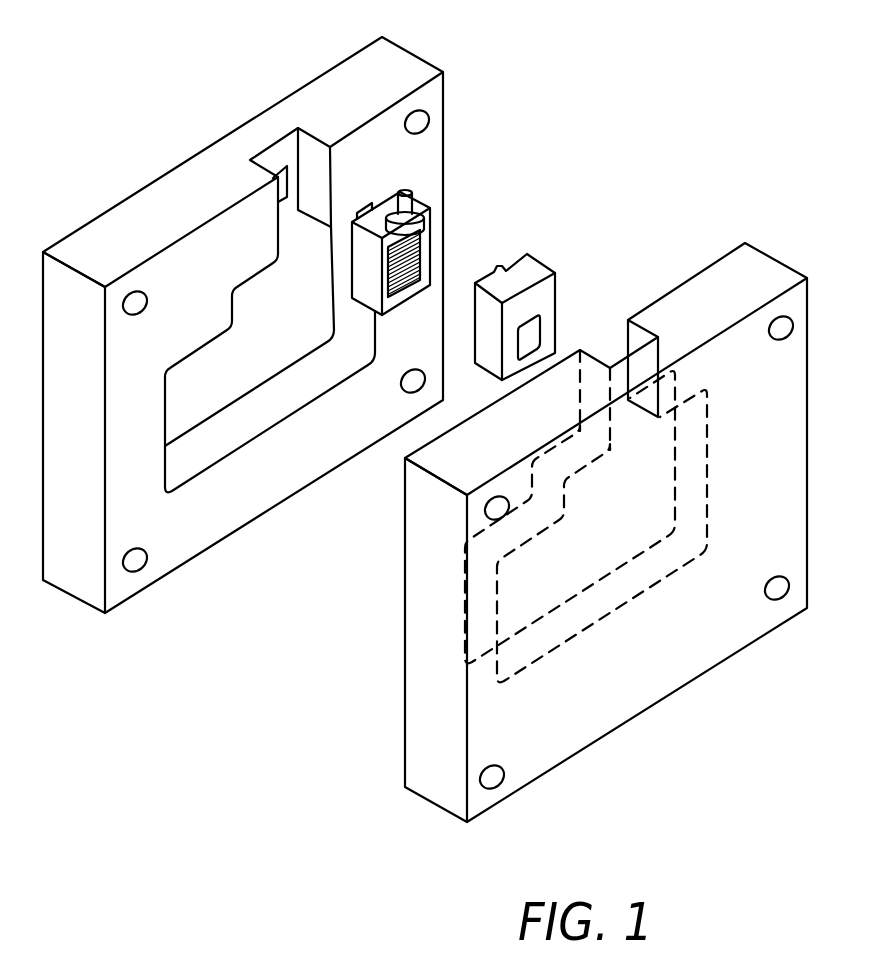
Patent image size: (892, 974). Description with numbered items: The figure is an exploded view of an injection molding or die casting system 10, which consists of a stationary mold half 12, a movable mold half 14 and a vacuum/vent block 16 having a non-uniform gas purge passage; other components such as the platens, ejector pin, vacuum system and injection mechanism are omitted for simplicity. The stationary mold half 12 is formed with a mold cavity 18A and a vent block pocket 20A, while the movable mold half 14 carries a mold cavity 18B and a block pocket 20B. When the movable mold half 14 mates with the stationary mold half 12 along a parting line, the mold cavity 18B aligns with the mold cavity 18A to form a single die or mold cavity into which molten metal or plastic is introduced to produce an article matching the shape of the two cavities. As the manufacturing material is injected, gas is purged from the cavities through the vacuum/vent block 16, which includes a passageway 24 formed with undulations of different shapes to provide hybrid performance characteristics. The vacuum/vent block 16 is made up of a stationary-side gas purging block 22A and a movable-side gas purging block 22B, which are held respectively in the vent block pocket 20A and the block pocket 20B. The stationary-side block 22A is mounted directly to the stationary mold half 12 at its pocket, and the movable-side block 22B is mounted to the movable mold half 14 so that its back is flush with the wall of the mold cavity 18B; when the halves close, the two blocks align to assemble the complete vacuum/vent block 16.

The injection molding or die casting system 10 is at (680, 180).
The stationary mold half 12 is at (88, 566).
The movable mold half 14 is at (432, 729).
The vacuum/vent block 16 is at (540, 199).
The mold cavity 18A is at (200, 398).
The mold cavity 18B is at (580, 583).
The vent block pocket 20A is at (271, 155).
The block pocket 20B is at (639, 333).
The stationary-side gas purging block 22A is at (425, 213).
The movable-side gas purging block 22B is at (545, 293).
The passageway 24 is at (406, 297).